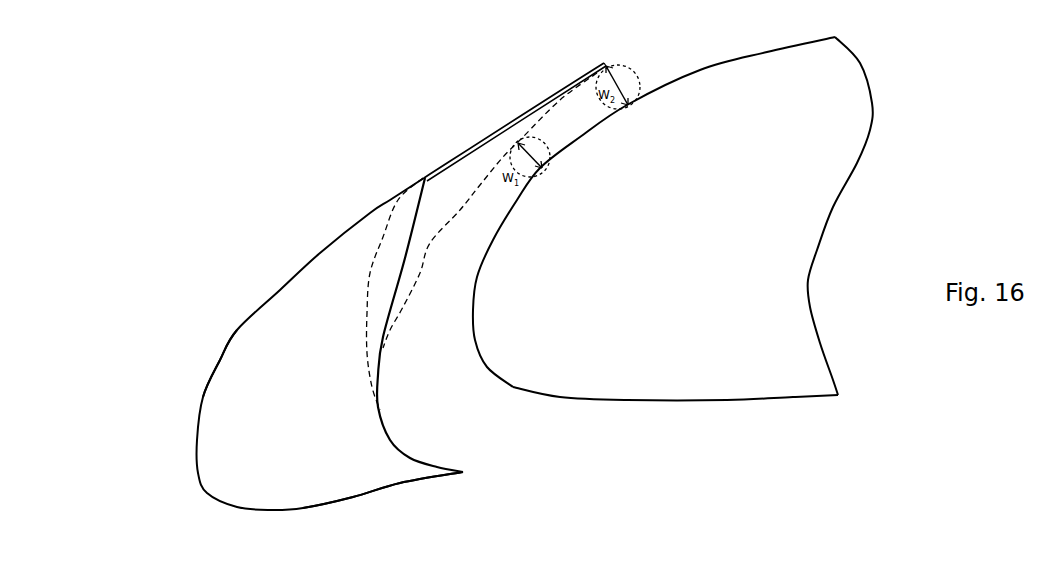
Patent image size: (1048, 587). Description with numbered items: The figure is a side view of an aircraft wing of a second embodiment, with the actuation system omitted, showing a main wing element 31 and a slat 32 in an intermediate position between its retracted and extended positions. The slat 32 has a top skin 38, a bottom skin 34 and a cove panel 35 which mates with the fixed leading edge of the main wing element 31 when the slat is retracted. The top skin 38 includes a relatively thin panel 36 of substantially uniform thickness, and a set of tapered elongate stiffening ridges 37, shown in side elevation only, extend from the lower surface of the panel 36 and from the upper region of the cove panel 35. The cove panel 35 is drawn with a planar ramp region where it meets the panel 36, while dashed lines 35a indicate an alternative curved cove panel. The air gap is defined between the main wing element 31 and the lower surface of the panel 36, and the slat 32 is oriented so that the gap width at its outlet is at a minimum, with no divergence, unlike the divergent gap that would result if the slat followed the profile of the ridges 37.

The main wing element 31 is at (750, 80).
The slat 32 is at (288, 308).
The bottom skin 34 is at (430, 482).
The cove panel 35 is at (385, 420).
The dashed lines 35a is at (370, 270).
The panel 36 is at (503, 122).
The tapered elongate stiffening ridges 37 is at (430, 243).
The top skin 38 is at (220, 358).